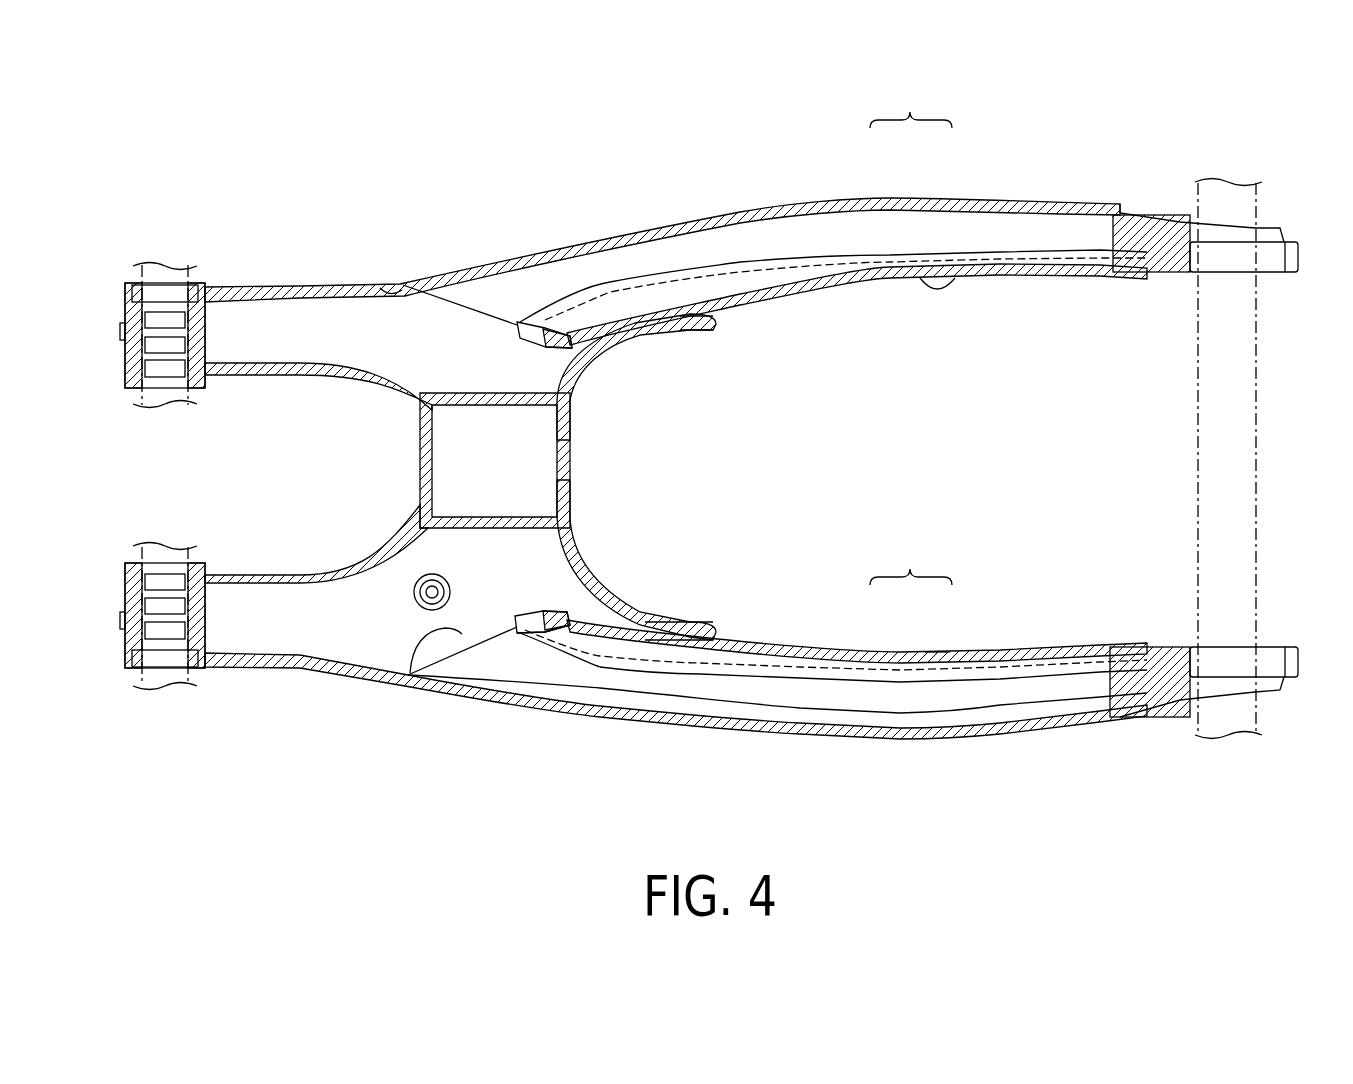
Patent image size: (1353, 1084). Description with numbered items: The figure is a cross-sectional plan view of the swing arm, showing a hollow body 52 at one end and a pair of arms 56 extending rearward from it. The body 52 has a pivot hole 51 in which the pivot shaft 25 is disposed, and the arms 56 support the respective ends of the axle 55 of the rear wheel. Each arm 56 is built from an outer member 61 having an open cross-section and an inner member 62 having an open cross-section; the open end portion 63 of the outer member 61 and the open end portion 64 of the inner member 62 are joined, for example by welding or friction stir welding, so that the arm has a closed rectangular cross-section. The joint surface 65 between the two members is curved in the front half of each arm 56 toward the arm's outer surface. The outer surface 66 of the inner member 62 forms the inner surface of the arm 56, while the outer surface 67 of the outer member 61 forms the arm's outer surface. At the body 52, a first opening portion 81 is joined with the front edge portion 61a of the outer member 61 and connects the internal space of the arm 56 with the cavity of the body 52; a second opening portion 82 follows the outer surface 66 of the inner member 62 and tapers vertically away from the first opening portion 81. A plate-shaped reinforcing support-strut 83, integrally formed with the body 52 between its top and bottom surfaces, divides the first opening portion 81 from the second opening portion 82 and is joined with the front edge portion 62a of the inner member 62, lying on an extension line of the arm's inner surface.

The pivot shaft 25 is at (135, 398).
The pivot hole 51 is at (188, 290).
The body 52 is at (318, 283).
The axle 55 is at (1258, 433).
The arm 56 is at (1084, 399).
The outer member 61 is at (885, 200).
The front edge portion 61a is at (413, 640).
The inner member 62 is at (946, 282).
The front edge portion 62a is at (515, 635).
The open end portion 63 is at (862, 265).
The open end portion 64 is at (768, 262).
The joint surface 65 is at (721, 268).
The outer surface 66 is at (650, 333).
The outer surface 67 is at (657, 232).
The first opening portion 81 is at (455, 652).
The second opening portion 82 is at (602, 640).
The reinforcing support-strut 83 is at (567, 347).